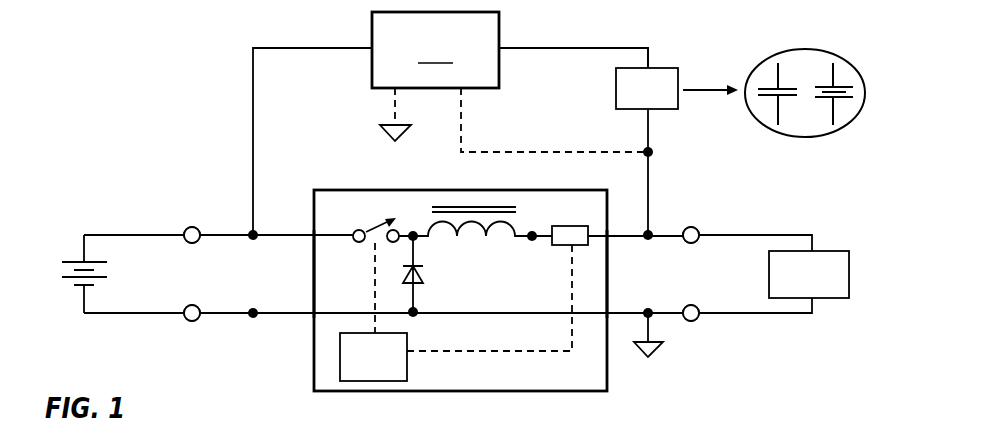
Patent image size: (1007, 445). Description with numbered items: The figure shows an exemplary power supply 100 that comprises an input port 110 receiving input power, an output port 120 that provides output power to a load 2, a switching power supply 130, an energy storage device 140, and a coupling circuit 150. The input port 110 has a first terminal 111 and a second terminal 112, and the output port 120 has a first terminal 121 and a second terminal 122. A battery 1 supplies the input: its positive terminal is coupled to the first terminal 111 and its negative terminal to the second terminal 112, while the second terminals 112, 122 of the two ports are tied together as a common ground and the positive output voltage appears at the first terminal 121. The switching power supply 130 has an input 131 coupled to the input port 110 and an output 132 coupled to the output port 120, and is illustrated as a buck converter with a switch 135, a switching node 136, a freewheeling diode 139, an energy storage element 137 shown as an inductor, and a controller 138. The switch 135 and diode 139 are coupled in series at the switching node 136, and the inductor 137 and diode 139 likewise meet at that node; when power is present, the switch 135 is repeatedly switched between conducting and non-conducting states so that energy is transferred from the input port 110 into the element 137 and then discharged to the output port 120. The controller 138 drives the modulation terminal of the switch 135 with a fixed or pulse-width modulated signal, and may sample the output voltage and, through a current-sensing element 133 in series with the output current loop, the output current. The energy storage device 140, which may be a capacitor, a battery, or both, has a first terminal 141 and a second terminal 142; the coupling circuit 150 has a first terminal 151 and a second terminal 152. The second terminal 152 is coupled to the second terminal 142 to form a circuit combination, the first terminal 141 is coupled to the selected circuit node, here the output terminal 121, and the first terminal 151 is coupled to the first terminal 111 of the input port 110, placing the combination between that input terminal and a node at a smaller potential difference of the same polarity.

The power supply 100 is at (160, 106).
The battery 1 is at (73, 258).
The load 2 is at (823, 252).
The input port 110 is at (191, 227).
The first terminal 111 is at (185, 245).
The second terminal 112 is at (187, 322).
The output port 120 is at (691, 227).
The first terminal 121 is at (699, 243).
The second terminal 122 is at (698, 320).
The switching power supply 130 is at (314, 391).
The input 131 is at (314, 235).
The output 132 is at (607, 235).
The current-sensing element 133 is at (557, 247).
The switch 135 is at (375, 224).
The switching node 136 is at (411, 229).
The energy storage element 137 is at (487, 237).
The controller 138 is at (407, 362).
The freewheeling diode 139 is at (420, 282).
The energy storage device 140 is at (679, 70).
The first terminal 141 is at (650, 128).
The second terminal 142 is at (650, 58).
The coupling circuit 150 is at (512, 84).
The first terminal 151 is at (366, 47).
The second terminal 152 is at (507, 47).